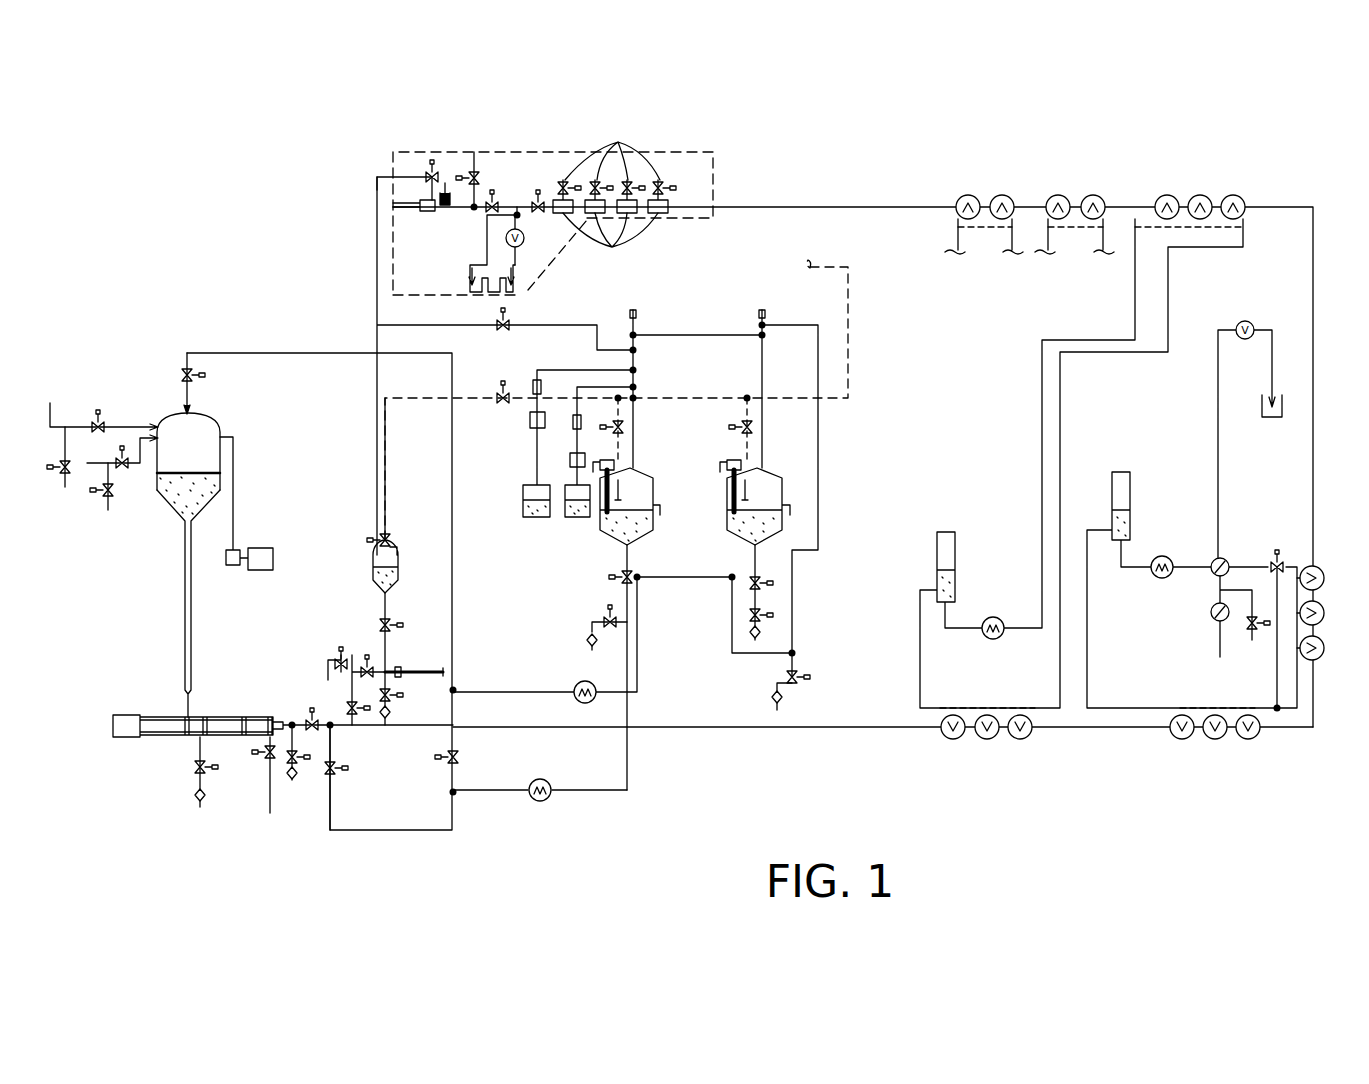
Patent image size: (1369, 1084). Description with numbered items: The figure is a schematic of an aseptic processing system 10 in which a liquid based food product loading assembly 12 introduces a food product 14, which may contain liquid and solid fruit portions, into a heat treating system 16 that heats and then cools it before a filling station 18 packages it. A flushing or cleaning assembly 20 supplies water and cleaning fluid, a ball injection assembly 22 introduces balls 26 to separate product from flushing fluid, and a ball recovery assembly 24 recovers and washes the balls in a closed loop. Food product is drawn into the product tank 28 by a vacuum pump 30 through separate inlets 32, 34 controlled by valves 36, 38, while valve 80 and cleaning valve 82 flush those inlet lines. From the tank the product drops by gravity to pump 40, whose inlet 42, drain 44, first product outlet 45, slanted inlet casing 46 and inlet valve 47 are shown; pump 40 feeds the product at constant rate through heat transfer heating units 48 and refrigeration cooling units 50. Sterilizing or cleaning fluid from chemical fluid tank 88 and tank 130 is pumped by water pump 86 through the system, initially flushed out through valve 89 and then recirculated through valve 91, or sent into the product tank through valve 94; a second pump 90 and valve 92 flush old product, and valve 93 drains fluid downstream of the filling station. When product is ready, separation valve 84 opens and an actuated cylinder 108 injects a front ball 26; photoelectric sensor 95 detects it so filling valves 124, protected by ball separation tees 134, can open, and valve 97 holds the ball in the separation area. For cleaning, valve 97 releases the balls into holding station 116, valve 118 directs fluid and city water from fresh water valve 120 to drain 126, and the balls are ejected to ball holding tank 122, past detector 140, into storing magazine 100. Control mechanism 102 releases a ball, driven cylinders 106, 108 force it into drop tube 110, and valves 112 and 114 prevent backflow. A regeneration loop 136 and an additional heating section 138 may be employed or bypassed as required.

The aseptic processing system 10 is at (205, 205).
The liquid based food product loading assembly 12 is at (173, 523).
The food product 14 is at (170, 515).
The heat treating system 16 is at (898, 766).
The filling station 18 is at (587, 203).
The flushing or cleaning assembly 20 is at (662, 572).
The ball injection assembly 22 is at (380, 578).
The ball recovery assembly 24 is at (350, 232).
The ball 26 is at (395, 672).
The product tank 28 is at (226, 412).
The vacuum pump 30 is at (262, 545).
The inlet 32 is at (100, 400).
The second inlet line 34 is at (92, 465).
The inlet valve 36 is at (100, 412).
The second inlet valve 38 is at (124, 470).
The pump 40 is at (283, 743).
The inlet 42 is at (190, 717).
The drain 44 is at (203, 742).
The first product outlet 45 is at (295, 718).
The inlet casing 46 is at (182, 717).
The inlet valve 47 is at (266, 760).
The heat transfer heating units 48 is at (1210, 762).
The refrigeration cooling units 50 is at (1072, 165).
The valve 80 is at (55, 475).
The cleaning valve 82 is at (103, 495).
The separation valve 84 is at (322, 638).
The water pump 86 is at (575, 683).
The chemical fluid tank 88 is at (648, 468).
The valve 89 is at (815, 665).
The second pump 90 is at (555, 800).
The valve 91 is at (608, 577).
The valve 92 is at (350, 768).
The valve 93 is at (527, 242).
The valve 94 is at (183, 374).
The photoelectric sensor 95 is at (536, 198).
The valve 97 is at (493, 190).
The storing magazine 100 is at (387, 642).
The control mechanism 102 is at (390, 688).
The driven cylinder 106 is at (443, 670).
The driven cylinder 108 is at (363, 665).
The drop tube 110 is at (388, 700).
The valve 112 is at (352, 665).
The valve 114 is at (354, 715).
The holding station 116 is at (402, 210).
The valve 118 is at (428, 162).
The fresh water valve 120 is at (462, 170).
The ball holding tank 122 is at (403, 560).
The filling valves 124 is at (614, 163).
The drain 126 is at (513, 295).
The tank 130 is at (775, 458).
The ball separation tees 134 is at (610, 247).
The regeneration loop 136 is at (1012, 505).
The heating section 138 is at (1333, 625).
The ball detector 140 is at (388, 620).